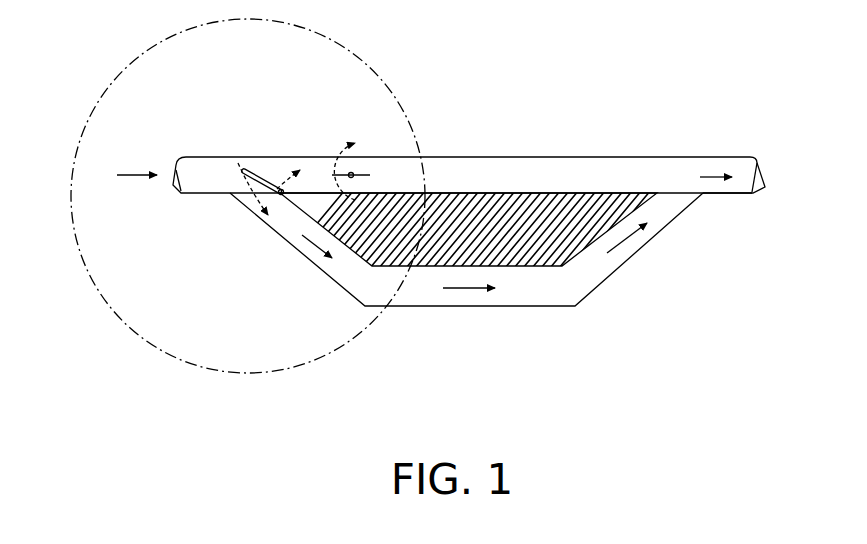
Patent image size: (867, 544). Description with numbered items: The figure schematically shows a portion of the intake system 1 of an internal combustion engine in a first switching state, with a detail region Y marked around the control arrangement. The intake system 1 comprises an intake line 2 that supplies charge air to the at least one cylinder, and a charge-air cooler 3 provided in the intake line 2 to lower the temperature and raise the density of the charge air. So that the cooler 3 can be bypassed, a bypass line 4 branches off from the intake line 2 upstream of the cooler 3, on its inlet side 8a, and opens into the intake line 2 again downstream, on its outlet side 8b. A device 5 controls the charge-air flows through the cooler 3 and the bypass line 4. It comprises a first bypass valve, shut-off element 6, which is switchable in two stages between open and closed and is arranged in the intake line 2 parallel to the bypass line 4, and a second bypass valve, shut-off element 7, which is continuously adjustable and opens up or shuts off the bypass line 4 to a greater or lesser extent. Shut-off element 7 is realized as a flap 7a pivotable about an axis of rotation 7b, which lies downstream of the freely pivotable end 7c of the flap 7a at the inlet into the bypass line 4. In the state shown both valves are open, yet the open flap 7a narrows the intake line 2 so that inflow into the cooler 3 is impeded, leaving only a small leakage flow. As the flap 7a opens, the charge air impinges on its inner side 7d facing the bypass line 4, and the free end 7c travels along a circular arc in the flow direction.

The intake system 1 is at (188, 62).
The intake line 2 is at (541, 160).
The charge-air cooler 3 is at (565, 268).
The bypass line 4 is at (523, 290).
The device for controlling the charge-air flows 5 is at (342, 85).
The shut-off element 6 is at (393, 143).
The shut-off element 7 is at (249, 211).
The flap 7a is at (261, 181).
The axis of rotation 7b is at (282, 197).
The freely pivotable end 7c is at (242, 171).
The inner side 7d is at (256, 183).
The inlet side 8a is at (193, 194).
The outlet side 8b is at (737, 188).
The detail region Y is at (145, 335).